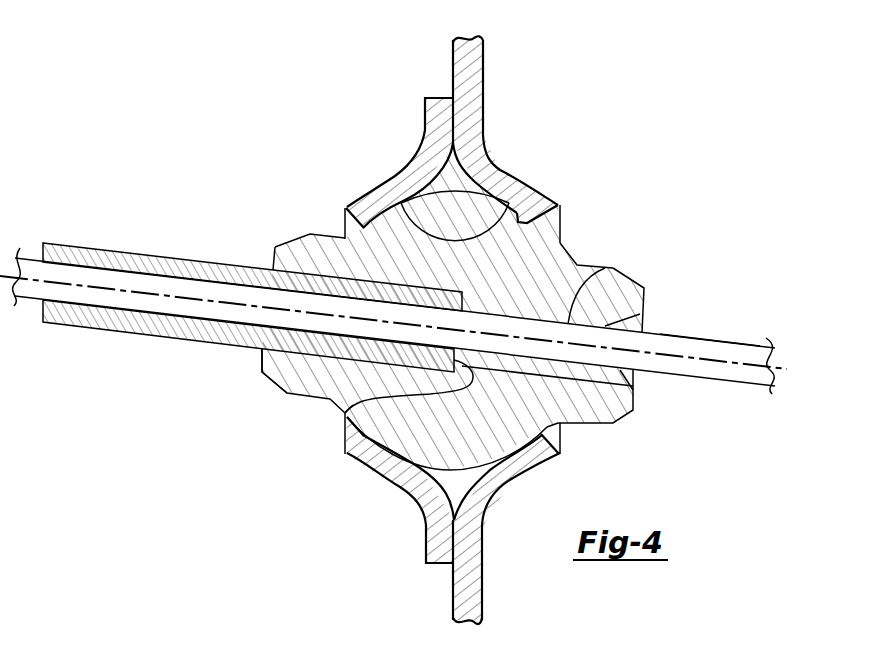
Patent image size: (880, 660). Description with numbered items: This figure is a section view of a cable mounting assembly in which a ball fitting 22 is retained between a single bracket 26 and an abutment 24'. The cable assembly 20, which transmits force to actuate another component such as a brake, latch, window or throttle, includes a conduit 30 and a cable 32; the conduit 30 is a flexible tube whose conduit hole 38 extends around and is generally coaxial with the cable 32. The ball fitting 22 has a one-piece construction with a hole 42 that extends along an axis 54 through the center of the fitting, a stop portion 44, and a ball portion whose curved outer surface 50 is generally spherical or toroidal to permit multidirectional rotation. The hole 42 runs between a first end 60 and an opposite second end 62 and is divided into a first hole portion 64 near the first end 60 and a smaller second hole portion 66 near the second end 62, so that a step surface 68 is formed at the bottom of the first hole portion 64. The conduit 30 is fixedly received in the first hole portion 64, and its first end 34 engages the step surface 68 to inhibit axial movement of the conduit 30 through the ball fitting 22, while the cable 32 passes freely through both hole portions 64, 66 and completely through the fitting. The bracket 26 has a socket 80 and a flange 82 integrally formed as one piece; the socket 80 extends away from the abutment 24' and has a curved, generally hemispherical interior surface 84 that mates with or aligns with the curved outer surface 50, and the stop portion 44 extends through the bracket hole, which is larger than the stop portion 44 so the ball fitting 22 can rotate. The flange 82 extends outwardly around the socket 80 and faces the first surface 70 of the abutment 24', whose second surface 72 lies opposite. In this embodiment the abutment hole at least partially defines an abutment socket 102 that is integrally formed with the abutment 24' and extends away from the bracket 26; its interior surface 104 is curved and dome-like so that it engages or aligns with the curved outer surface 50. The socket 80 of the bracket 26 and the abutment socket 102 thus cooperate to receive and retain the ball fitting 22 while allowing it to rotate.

The cable assembly 20 is at (92, 366).
The ball fitting 22 is at (350, 205).
The abutment 24' is at (526, 572).
The bracket 26 is at (425, 118).
The conduit 30 is at (215, 343).
The cable 32 is at (680, 373).
The first end 34 is at (345, 415).
The conduit hole 38 is at (180, 317).
The hole 42 is at (600, 267).
The stop portion 44 is at (285, 240).
The curved outer surface 50 is at (563, 433).
The axis 54 is at (707, 337).
The first end 60 is at (270, 260).
The second end 62 is at (643, 322).
The first hole portion 64 is at (295, 356).
The second hole portion 66 is at (537, 363).
The step surface 68 is at (345, 415).
The first surface 70 is at (453, 70).
The second surface 72 is at (483, 72).
The socket 80 is at (377, 477).
The flange 82 is at (426, 533).
The interior surface 84 is at (408, 222).
The abutment socket 102 is at (518, 178).
The interior surface 104 is at (559, 204).